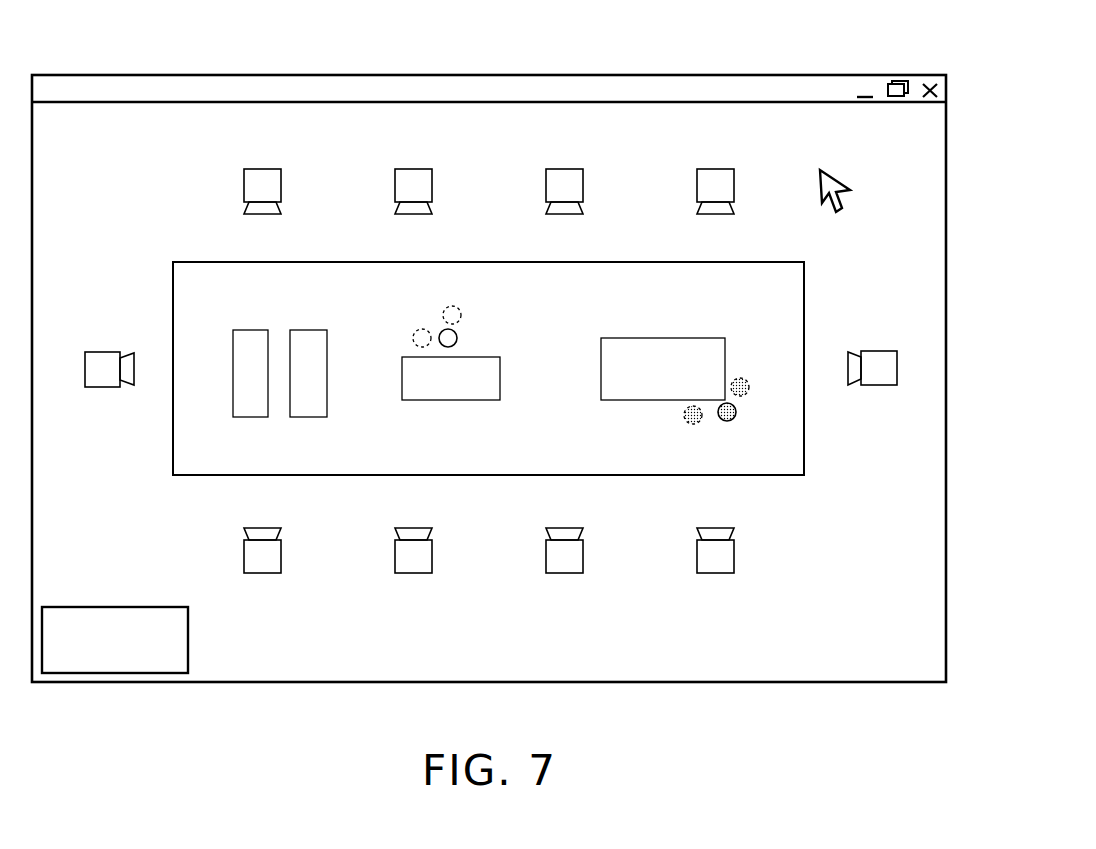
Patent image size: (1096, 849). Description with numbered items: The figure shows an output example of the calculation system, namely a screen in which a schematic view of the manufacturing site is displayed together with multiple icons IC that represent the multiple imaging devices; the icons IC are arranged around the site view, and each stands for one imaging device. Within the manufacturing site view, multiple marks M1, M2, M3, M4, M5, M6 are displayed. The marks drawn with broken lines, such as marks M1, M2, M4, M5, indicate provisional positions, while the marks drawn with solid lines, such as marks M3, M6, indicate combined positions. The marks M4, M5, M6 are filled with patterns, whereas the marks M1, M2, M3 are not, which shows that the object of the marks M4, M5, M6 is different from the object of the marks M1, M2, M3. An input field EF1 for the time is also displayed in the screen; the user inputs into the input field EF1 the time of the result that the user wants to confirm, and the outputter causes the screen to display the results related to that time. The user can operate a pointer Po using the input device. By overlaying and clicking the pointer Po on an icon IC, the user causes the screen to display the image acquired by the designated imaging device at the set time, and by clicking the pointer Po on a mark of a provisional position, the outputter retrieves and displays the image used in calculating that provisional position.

The icon IC is at (264, 182).
The mark M1 is at (420, 328).
The mark M2 is at (452, 305).
The mark M3 is at (458, 338).
The mark M4 is at (698, 425).
The mark M5 is at (750, 392).
The mark M6 is at (727, 422).
The pointer Po is at (830, 168).
The input field EF1 is at (112, 675).